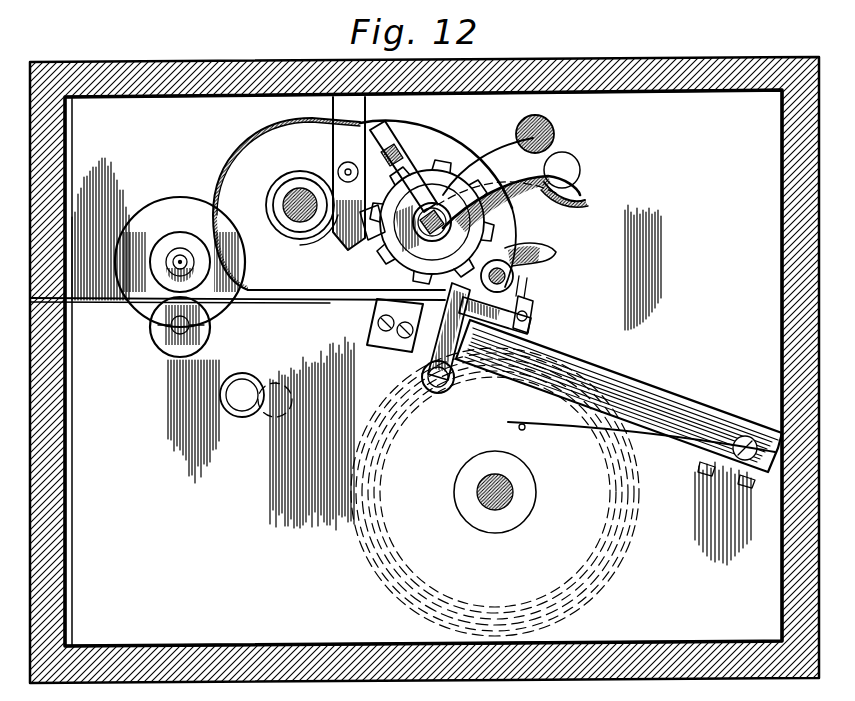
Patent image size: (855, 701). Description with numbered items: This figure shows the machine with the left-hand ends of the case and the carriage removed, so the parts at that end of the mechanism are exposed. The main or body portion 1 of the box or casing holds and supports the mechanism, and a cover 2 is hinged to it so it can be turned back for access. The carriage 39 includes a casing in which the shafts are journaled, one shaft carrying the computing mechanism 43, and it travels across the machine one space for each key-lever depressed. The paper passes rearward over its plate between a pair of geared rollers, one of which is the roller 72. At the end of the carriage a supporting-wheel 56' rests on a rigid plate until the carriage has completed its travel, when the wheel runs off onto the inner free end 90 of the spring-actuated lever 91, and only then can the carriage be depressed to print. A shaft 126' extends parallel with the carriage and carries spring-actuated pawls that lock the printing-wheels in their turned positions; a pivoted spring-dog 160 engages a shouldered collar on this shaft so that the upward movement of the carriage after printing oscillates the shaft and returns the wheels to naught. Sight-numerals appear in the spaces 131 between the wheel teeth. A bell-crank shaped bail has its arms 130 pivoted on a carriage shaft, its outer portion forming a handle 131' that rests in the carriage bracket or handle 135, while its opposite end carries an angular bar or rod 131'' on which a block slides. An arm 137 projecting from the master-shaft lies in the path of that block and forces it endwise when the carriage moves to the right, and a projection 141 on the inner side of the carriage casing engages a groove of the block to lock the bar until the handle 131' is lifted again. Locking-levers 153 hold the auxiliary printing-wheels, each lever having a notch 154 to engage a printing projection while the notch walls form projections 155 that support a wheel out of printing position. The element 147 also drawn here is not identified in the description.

The main or body portion of casing 1 is at (68, 521).
The cover 2 is at (143, 63).
The carriage 39 is at (252, 137).
The computing mechanism 43 is at (284, 208).
The supporting-wheel 56' is at (516, 318).
The roller 72 is at (181, 245).
The inner free end of lever 90 is at (486, 350).
The spring-actuated lever 91 is at (619, 404).
The shaft 126' is at (535, 279).
The bail arms 130 is at (500, 162).
The spaces between teeth 131 is at (547, 246).
The bail handle 131' is at (560, 134).
The angular bar or rod 131'' is at (523, 142).
The carriage bracket or handle 135 is at (582, 194).
The arm 137 is at (289, 173).
The projection 141 is at (479, 139).
The link 147 is at (446, 133).
The locking-levers 153 is at (335, 130).
The notch 154 is at (358, 230).
The projections 155 is at (432, 222).
The spring-dog 160 is at (423, 360).